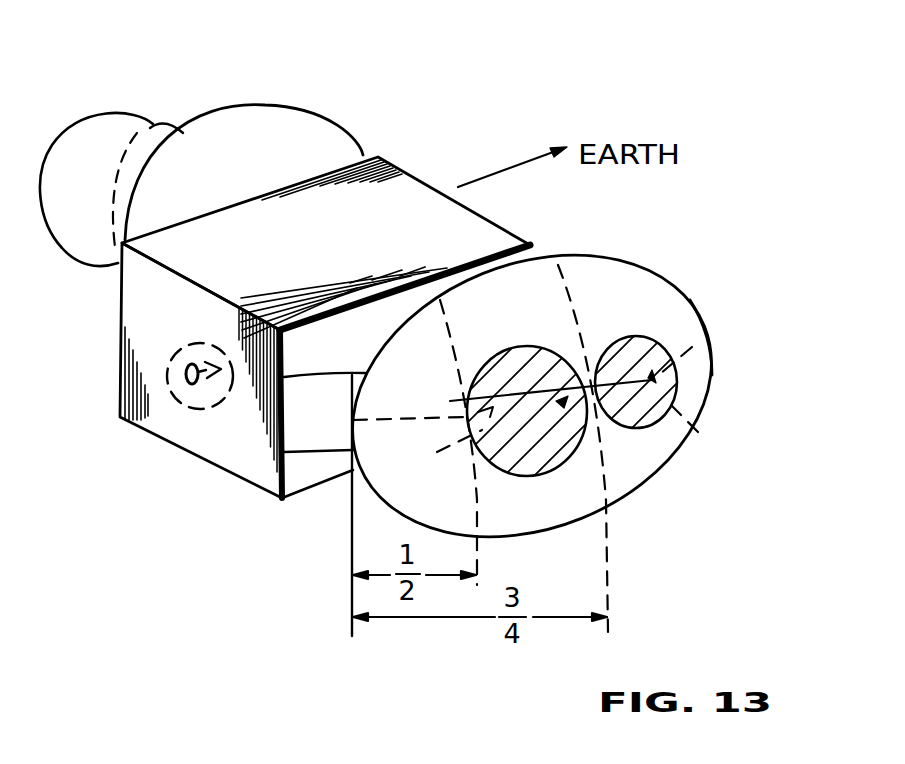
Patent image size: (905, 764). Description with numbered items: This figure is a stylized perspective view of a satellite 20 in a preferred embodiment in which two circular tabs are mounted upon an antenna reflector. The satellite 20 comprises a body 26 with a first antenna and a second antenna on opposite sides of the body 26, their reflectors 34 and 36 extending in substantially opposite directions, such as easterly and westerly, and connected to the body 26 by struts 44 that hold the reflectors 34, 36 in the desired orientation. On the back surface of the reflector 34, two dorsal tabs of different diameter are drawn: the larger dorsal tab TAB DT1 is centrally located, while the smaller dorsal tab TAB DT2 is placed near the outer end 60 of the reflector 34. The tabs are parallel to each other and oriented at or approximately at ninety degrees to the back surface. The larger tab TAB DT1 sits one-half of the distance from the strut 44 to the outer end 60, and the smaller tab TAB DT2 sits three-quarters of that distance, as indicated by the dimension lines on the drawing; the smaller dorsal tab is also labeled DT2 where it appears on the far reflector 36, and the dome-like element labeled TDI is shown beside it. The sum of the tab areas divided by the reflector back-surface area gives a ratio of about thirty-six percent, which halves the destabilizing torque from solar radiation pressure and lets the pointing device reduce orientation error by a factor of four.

The satellite 20 is at (397, 130).
The body 26 is at (183, 453).
The reflector 34 is at (587, 418).
The reflector 36 is at (317, 108).
The strut 44 is at (322, 440).
The outer end 60 is at (710, 355).
The dorsal tab DT2 is at (68, 128).
The detector TDI is at (163, 125).
The dorsal tab TAB DT1 is at (545, 428).
The dorsal tab TAB DT2 is at (600, 377).